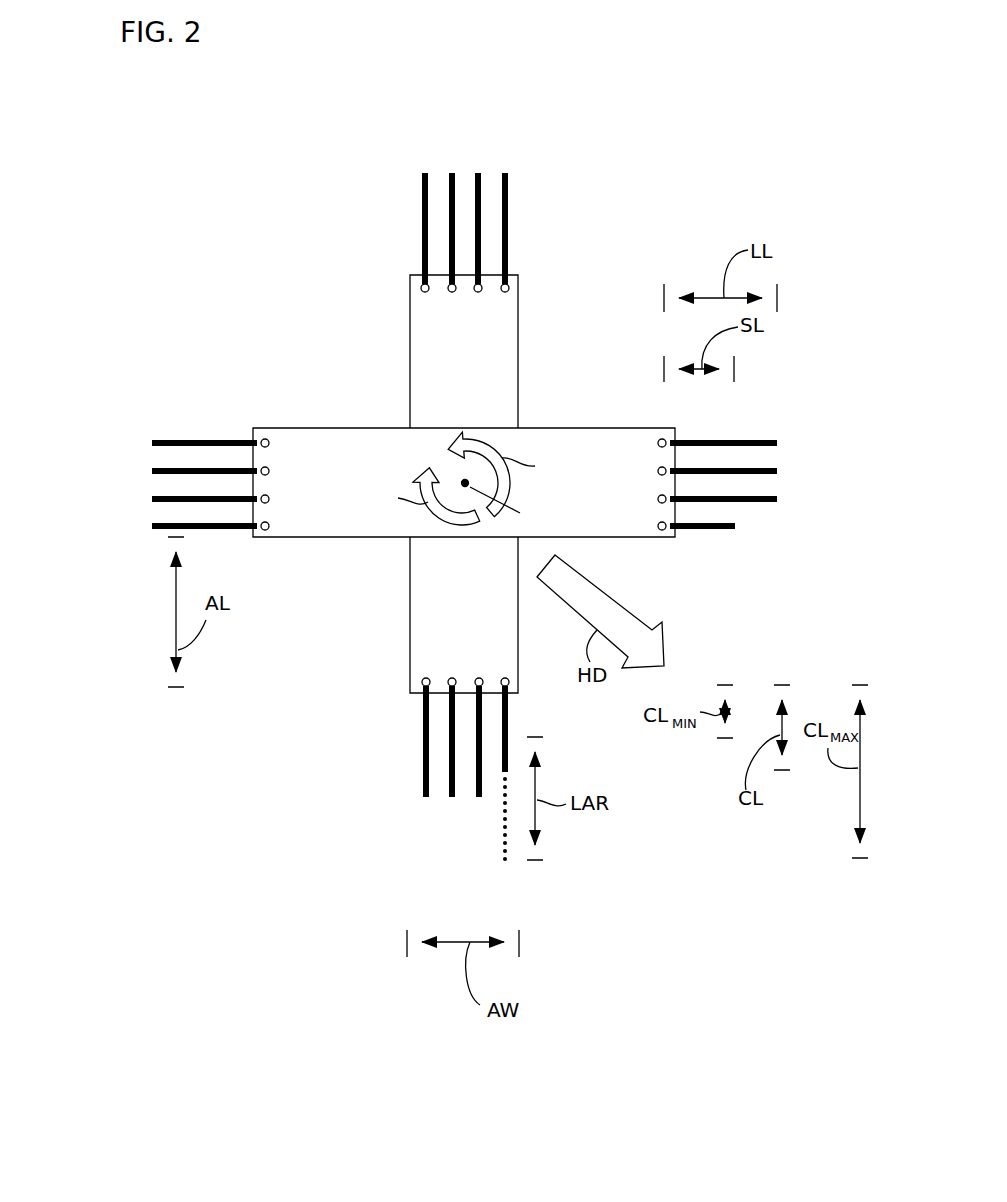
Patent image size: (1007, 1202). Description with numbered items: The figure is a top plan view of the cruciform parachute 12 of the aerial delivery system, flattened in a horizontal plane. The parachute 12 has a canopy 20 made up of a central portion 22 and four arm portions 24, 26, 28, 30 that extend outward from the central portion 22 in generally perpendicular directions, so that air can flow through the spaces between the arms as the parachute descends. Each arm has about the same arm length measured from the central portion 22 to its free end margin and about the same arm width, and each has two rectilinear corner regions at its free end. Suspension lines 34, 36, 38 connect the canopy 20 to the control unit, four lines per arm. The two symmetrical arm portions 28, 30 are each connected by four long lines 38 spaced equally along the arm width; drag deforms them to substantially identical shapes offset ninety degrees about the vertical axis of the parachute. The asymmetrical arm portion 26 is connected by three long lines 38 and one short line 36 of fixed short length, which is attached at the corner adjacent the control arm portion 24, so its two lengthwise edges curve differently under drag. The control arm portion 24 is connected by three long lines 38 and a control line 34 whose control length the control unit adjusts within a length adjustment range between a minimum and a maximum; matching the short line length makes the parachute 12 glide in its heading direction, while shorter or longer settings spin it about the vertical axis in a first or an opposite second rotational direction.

The parachute 12 is at (230, 768).
The canopy 20 is at (536, 410).
The central portion 22 is at (395, 440).
The control arm portion 24 is at (420, 607).
The asymmetrical arm portion 26 is at (612, 440).
The symmetrical arm portion 28 is at (432, 340).
The symmetrical arm portion 30 is at (316, 520).
The control line 34 is at (510, 706).
The short line 36 is at (725, 530).
The long lines 38 is at (425, 188).